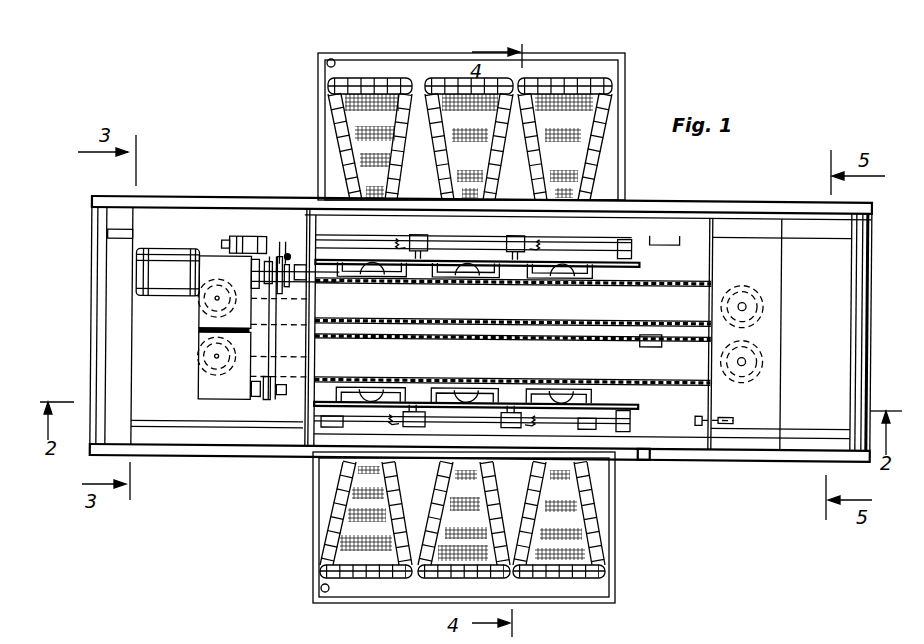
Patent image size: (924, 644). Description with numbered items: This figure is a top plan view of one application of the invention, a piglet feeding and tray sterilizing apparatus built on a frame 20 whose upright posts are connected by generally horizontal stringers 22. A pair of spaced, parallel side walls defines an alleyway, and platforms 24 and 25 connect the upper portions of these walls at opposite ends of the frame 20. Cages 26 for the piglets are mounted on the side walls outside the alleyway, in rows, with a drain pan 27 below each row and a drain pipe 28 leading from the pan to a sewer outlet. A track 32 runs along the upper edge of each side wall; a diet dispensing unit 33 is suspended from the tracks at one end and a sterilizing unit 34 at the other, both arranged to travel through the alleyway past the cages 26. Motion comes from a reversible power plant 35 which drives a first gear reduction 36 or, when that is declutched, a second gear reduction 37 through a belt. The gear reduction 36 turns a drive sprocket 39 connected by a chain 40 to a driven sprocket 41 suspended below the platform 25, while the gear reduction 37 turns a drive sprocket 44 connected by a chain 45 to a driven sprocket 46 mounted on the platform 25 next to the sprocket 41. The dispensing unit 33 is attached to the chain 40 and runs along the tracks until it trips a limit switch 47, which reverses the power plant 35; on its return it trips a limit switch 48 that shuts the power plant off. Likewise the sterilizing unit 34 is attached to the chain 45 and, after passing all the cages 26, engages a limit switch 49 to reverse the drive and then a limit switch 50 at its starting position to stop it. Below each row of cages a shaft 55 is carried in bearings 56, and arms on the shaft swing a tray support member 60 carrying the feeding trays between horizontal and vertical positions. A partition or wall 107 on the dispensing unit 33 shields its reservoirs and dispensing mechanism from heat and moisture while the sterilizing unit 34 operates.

The frame 20 is at (236, 188).
The stringers 22 is at (205, 457).
The platform 24 is at (138, 347).
The platform 25 is at (770, 265).
The cages 26 is at (624, 96).
The drain pan 27 is at (330, 130).
The drain pipe 28 is at (326, 64).
The track 32 is at (660, 446).
The diet dispensing unit 33 is at (808, 410).
The sterilizing unit 34 is at (110, 306).
The reversible power plant 35 is at (165, 256).
The first gear reduction 36 is at (210, 270).
The second gear reduction 37 is at (208, 348).
The drive sprocket 39 is at (205, 319).
The chain 40 is at (470, 296).
The driven sprocket 41 is at (760, 300).
The drive sprocket 44 is at (198, 382).
The chain 45 is at (423, 350).
The driven sprocket 46 is at (762, 354).
The limit switch 47 is at (340, 424).
The limit switch 48 is at (667, 230).
The limit switch 49 is at (583, 426).
The limit switch 50 is at (104, 238).
The shaft 55 is at (492, 222).
The bearings 56 is at (633, 253).
The tray support member 60 is at (505, 264).
The partition or wall 107 is at (640, 289).